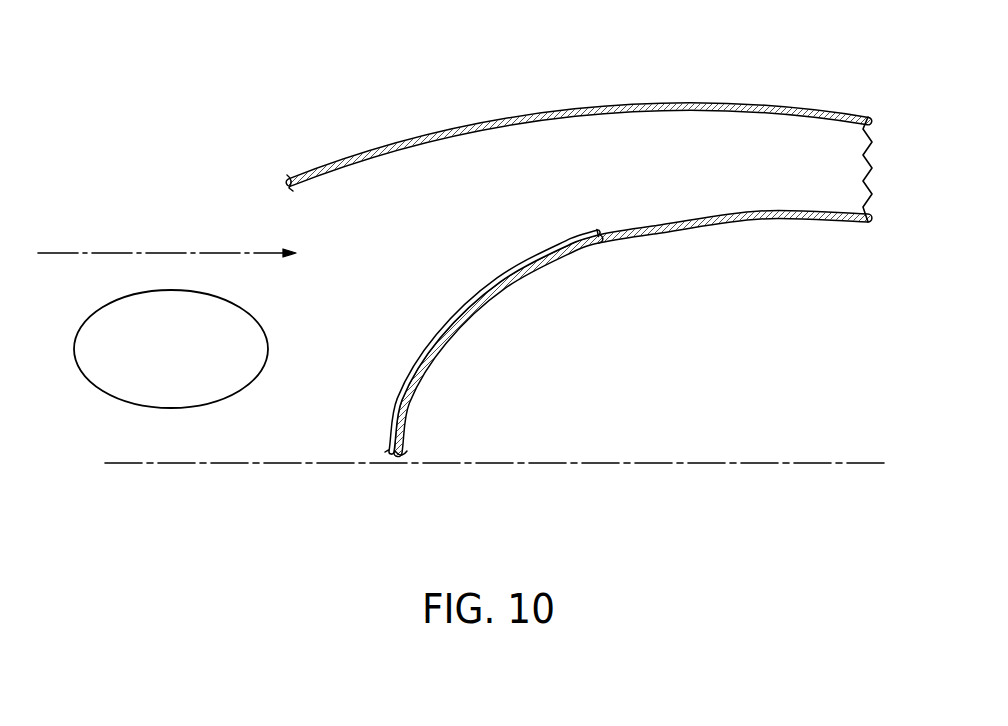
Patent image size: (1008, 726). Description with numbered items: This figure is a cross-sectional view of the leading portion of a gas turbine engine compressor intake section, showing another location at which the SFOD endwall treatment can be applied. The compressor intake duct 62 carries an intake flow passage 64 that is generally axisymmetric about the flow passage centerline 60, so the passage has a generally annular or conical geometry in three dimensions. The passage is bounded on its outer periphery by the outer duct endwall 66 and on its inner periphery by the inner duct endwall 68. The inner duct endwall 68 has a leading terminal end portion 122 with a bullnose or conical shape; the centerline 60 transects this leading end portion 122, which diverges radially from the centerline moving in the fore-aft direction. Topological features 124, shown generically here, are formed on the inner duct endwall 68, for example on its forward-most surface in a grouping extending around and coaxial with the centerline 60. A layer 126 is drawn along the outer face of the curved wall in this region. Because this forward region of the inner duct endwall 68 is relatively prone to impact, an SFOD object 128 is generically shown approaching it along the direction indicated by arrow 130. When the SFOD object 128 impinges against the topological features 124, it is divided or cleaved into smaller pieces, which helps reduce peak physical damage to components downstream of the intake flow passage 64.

The flow passage centerline 60 is at (781, 462).
The compressor intake duct 62 is at (579, 158).
The intake flow passage 64 is at (598, 183).
The outer duct endwall 66 is at (633, 106).
The inner duct endwall 68 is at (676, 232).
The leading terminal end portion 122 is at (475, 335).
The topological features 124 is at (429, 347).
The liner 126 is at (542, 273).
The SFOD object 128 is at (194, 361).
The arrow 130 is at (213, 253).